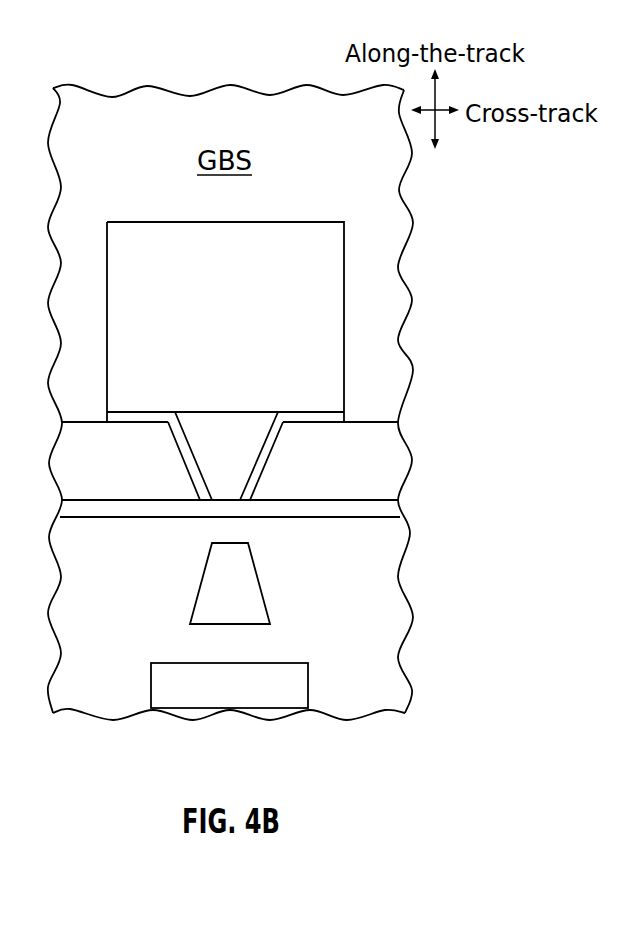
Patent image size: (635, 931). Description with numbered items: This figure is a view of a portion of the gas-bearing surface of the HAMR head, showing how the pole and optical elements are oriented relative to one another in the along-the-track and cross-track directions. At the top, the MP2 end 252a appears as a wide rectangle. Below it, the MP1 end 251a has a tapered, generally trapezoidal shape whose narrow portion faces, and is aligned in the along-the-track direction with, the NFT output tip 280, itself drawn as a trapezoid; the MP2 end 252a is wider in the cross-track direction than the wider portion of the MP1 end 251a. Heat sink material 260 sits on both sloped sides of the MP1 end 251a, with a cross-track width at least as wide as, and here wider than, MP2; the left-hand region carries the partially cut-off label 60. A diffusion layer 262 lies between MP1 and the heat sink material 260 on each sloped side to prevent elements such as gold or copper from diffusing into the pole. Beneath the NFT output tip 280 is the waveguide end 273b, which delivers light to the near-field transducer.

The MP2 end 252a is at (160, 245).
The heat sink material layer 60 is at (70, 440).
The heat sink material 260 is at (400, 465).
The diffusion layer 262 is at (185, 465).
The MP1 end 251a is at (225, 492).
The NFT output tip 280 is at (237, 562).
The waveguide 273b is at (283, 703).